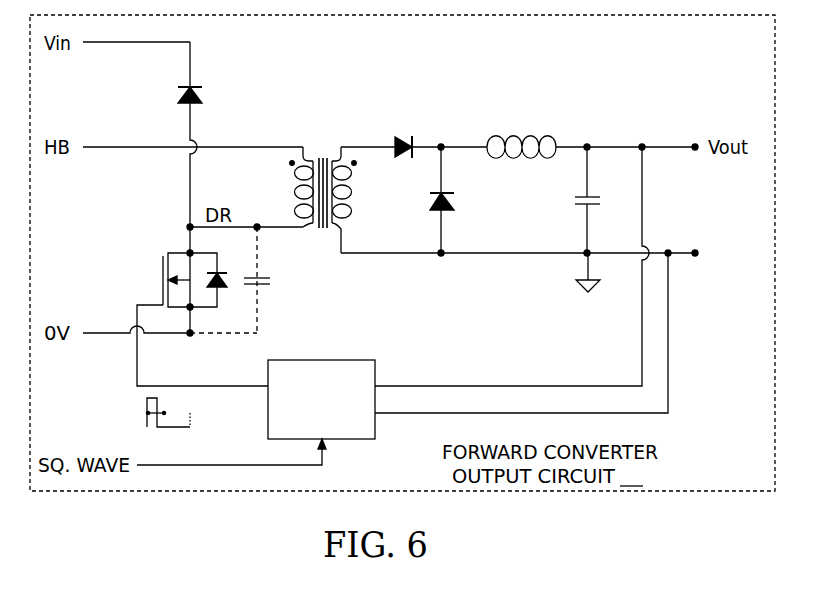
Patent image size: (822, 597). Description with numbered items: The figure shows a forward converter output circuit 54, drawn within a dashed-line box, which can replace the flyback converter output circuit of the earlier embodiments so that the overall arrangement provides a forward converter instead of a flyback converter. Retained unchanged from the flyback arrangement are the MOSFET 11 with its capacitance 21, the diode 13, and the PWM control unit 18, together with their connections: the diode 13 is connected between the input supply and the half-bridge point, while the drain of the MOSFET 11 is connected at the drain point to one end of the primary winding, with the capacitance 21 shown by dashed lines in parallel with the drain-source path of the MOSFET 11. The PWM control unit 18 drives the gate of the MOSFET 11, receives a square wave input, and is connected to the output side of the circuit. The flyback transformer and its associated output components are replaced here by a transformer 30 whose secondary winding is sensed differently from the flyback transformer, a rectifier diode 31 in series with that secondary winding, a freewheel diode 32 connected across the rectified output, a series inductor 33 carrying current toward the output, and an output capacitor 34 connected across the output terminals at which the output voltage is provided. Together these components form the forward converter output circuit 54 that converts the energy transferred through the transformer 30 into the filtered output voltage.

The MOSFET switch 11 is at (159, 272).
The diode 13 is at (205, 96).
The PWM control unit 18 is at (326, 359).
The parasitic capacitance 21 is at (268, 291).
The transformer 30 is at (322, 145).
The rectifier diode 31 is at (404, 133).
The freewheel diode 32 is at (428, 197).
The series inductor 33 is at (524, 133).
The output capacitor 34 is at (572, 200).
The forward converter output circuit 54 is at (631, 476).